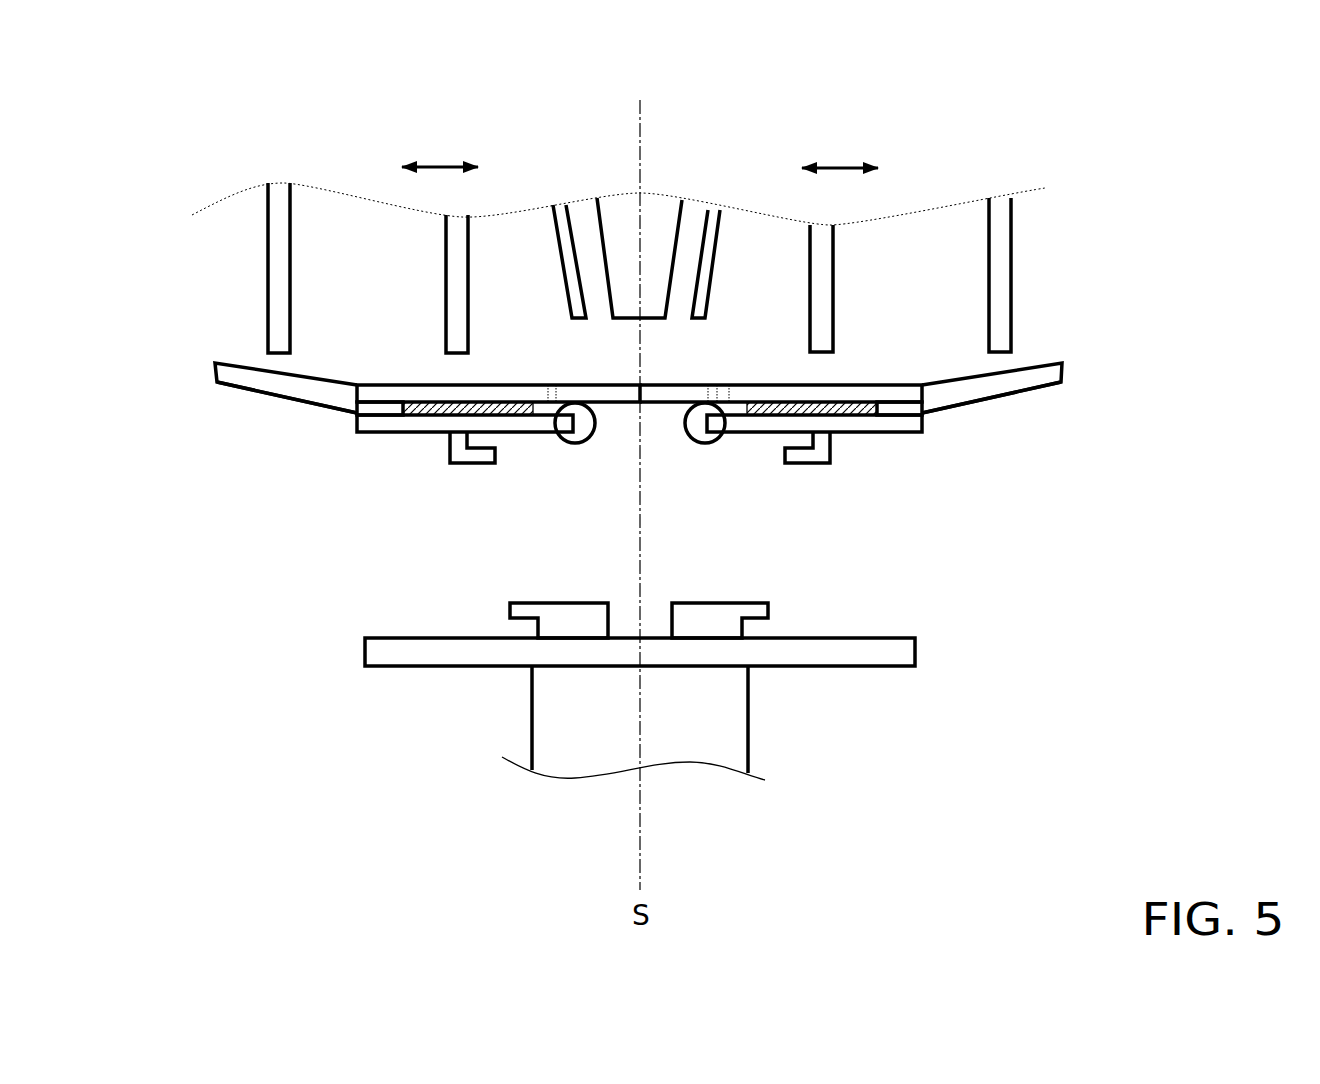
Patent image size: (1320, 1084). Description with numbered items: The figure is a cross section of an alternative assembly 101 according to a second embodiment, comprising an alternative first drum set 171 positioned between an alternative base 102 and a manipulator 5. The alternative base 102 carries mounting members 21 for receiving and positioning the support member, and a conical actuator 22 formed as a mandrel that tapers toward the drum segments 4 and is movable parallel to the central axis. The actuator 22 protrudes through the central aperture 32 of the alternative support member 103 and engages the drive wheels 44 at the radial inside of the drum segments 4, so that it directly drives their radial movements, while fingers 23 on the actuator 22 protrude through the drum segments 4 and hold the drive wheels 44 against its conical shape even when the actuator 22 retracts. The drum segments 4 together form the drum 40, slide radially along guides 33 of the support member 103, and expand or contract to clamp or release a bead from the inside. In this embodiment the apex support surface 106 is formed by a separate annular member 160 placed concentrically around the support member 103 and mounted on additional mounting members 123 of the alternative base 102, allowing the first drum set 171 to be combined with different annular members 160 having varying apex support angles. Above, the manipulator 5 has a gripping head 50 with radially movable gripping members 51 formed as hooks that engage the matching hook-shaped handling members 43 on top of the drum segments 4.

The manipulator 5 is at (620, 698).
The alternative assembly 101 is at (192, 253).
The alternative base 102 is at (333, 147).
The mounting member 21 is at (457, 248).
The actuator 22 is at (677, 207).
The finger 23 is at (568, 212).
The additional mounting member 123 is at (278, 315).
The alternative support member 103 is at (495, 393).
The central aperture 32 is at (639, 358).
The guide 33 is at (855, 410).
The apex support surface 106 is at (631, 439).
The annular member 160 is at (307, 397).
The alternative first drum set 171 is at (610, 444).
The drum segment 4 is at (639, 474).
The drum 40 is at (397, 425).
The handling member 43 is at (472, 458).
The drive wheel 44 is at (595, 440).
The gripping head 50 is at (550, 712).
The gripping member 51 is at (560, 622).